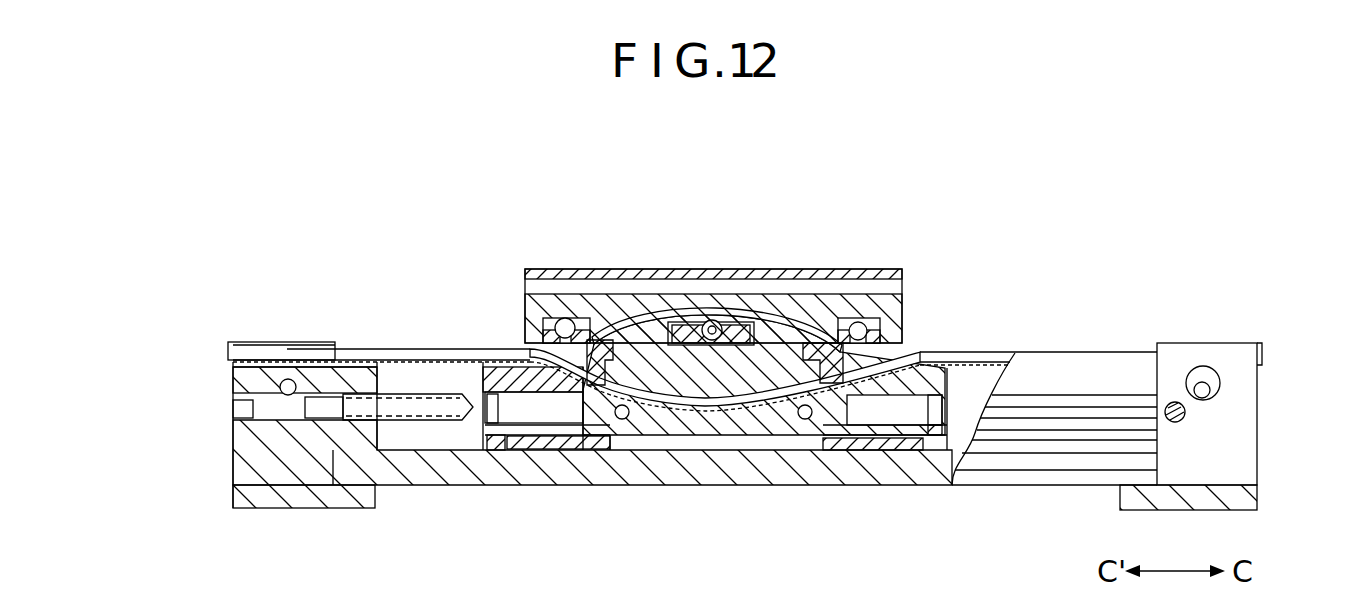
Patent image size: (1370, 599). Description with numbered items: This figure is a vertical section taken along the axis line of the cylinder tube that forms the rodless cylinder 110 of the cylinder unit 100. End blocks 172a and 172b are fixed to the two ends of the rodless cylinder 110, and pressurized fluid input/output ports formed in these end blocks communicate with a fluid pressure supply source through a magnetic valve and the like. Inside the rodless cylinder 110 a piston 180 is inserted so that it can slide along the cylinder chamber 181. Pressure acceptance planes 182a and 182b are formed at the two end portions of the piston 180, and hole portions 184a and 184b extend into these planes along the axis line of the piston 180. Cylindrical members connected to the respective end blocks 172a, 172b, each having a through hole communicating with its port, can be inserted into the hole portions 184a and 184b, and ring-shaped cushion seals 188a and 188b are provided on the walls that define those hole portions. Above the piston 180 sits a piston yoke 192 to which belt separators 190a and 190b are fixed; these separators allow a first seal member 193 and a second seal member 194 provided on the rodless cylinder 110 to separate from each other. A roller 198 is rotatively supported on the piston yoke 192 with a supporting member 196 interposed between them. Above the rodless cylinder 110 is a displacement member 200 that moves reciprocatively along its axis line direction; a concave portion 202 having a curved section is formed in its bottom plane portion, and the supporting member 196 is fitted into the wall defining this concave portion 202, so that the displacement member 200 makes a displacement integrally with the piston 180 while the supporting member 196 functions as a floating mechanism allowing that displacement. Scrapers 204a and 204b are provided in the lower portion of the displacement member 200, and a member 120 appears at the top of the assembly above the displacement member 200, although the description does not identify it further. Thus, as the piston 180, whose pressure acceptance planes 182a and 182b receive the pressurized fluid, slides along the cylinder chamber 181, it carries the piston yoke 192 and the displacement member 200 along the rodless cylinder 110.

The optical pickup device 100 is at (952, 167).
The rodless cylinder 110 is at (1107, 344).
The cover 120 is at (724, 268).
The end block 172a is at (287, 470).
The end block 172b is at (1240, 447).
The piston 180 is at (649, 422).
The cylinder chamber 181 is at (410, 442).
The pressure acceptance plane 182a is at (484, 436).
The pressure acceptance plane 182b is at (957, 452).
The hole portion 184a is at (540, 423).
The hole portion 184b is at (883, 425).
The cushion seal 188a is at (480, 348).
The cushion seal 188b is at (942, 368).
The belt separator 190a is at (597, 338).
The belt separator 190b is at (823, 325).
The piston yoke 192 is at (698, 370).
The first seal member 193 is at (922, 352).
The second seal member 194 is at (897, 300).
The supporting member 196 is at (750, 312).
The roller 198 is at (709, 322).
The displacement member 200 is at (793, 288).
The concave portion 202 is at (648, 305).
The scraper 204a is at (565, 318).
The scraper 204b is at (866, 322).